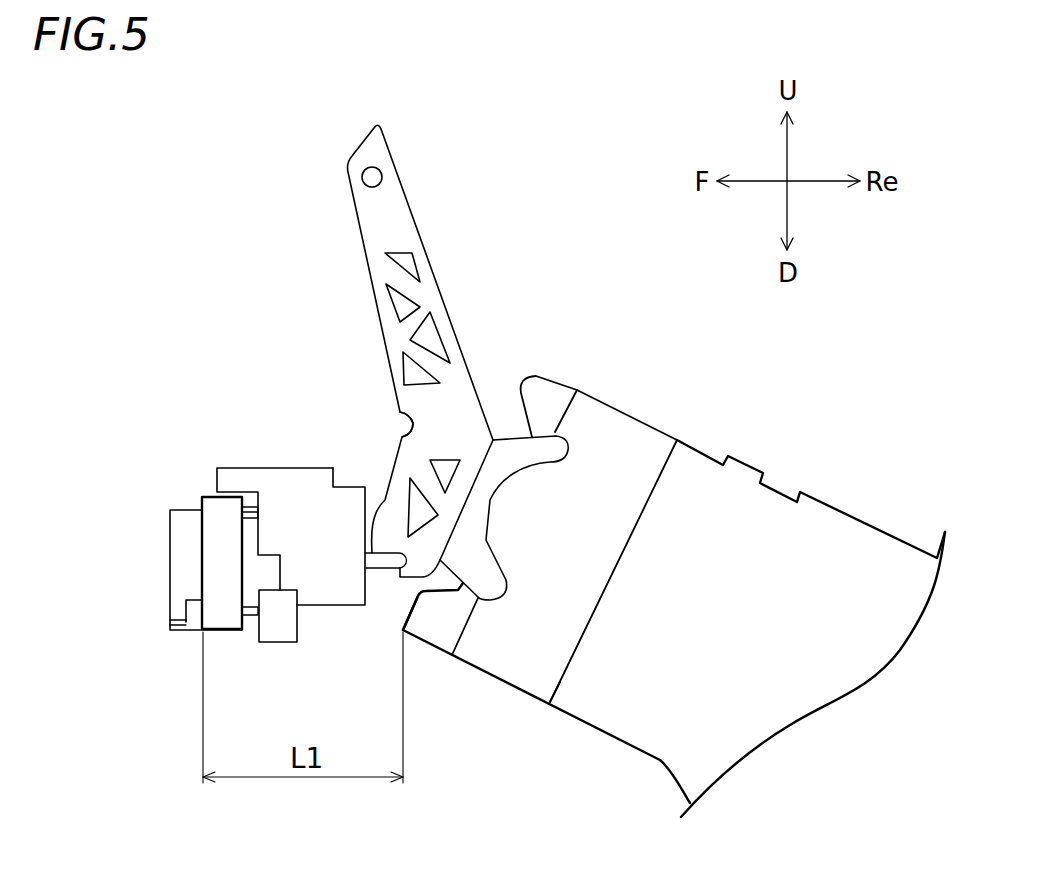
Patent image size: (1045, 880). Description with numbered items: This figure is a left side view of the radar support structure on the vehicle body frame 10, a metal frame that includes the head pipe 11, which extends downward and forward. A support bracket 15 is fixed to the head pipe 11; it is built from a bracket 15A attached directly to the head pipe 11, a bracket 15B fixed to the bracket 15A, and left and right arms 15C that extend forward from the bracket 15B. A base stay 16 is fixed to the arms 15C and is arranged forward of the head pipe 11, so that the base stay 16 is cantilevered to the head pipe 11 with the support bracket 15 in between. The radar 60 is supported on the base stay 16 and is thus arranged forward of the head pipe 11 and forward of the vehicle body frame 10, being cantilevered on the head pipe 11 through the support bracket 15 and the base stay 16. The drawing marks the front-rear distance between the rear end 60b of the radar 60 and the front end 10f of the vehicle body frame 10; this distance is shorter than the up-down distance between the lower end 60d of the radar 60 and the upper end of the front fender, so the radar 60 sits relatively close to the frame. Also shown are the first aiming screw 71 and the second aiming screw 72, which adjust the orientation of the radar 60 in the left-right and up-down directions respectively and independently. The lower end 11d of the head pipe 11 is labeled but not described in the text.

The vehicle body frame 10 is at (829, 492).
The front end of the vehicle body frame 10f is at (403, 630).
The head pipe 11 is at (633, 413).
The cover lower end 11d is at (550, 702).
The support bracket 15 is at (474, 290).
The bracket 15A is at (493, 440).
The bracket 15B is at (397, 457).
The arms 15C is at (382, 572).
The base stay 16 is at (300, 468).
The radar 60 is at (177, 533).
The rear end of the radar 60b is at (202, 510).
The lower end of the radar 60d is at (175, 630).
The first aiming screw 71 is at (248, 507).
The second aiming screw 72 is at (248, 615).